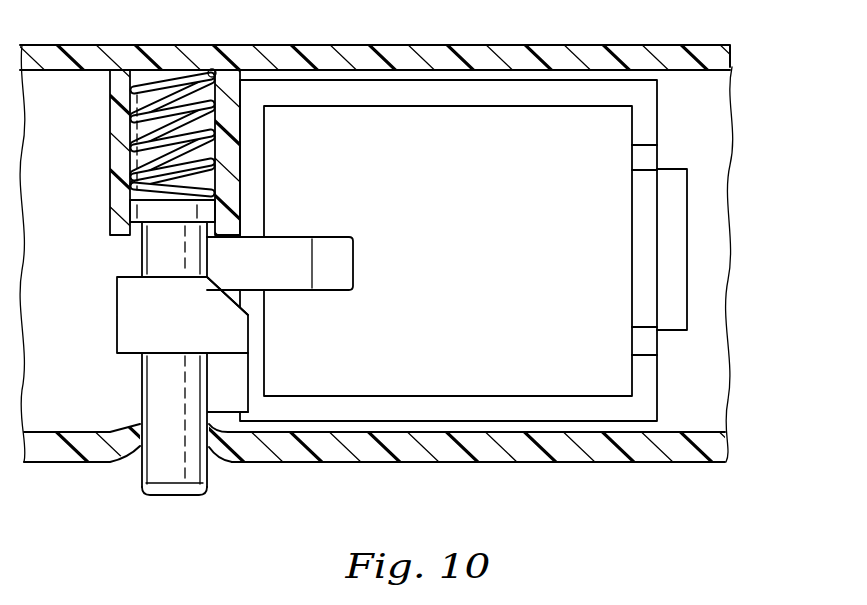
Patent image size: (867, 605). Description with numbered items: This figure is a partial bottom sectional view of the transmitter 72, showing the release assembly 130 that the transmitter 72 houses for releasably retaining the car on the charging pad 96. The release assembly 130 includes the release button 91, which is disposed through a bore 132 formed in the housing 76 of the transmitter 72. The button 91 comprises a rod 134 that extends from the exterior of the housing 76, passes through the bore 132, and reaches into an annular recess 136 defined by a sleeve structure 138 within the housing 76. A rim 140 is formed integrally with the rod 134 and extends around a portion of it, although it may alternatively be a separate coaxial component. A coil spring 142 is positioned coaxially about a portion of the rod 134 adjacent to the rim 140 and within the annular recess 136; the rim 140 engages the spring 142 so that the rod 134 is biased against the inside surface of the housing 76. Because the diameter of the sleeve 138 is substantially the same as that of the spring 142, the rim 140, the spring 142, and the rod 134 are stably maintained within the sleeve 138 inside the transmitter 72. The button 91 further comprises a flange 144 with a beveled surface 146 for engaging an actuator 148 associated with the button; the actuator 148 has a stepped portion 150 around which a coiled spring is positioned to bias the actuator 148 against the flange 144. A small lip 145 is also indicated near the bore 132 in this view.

The transmitter 72 is at (433, 302).
The housing 76 is at (520, 462).
The release button 91 is at (131, 482).
The charging pad 96 is at (654, 100).
The release assembly 130 is at (222, 366).
The bore 132 is at (222, 462).
The rod 134 is at (157, 389).
The annular recess 136 is at (208, 70).
The sleeve structure 138 is at (117, 120).
The rim 140 is at (53, 253).
The coil spring 142 is at (160, 157).
The flange 144 is at (124, 305).
The lip 145 is at (243, 402).
The beveled surface 146 is at (247, 312).
The actuator 148 is at (242, 275).
The stepped portion 150 is at (346, 272).